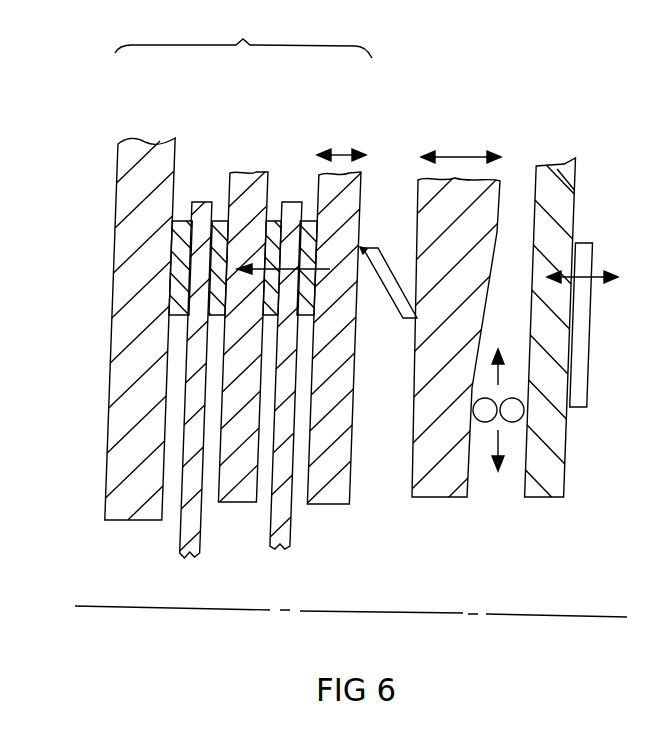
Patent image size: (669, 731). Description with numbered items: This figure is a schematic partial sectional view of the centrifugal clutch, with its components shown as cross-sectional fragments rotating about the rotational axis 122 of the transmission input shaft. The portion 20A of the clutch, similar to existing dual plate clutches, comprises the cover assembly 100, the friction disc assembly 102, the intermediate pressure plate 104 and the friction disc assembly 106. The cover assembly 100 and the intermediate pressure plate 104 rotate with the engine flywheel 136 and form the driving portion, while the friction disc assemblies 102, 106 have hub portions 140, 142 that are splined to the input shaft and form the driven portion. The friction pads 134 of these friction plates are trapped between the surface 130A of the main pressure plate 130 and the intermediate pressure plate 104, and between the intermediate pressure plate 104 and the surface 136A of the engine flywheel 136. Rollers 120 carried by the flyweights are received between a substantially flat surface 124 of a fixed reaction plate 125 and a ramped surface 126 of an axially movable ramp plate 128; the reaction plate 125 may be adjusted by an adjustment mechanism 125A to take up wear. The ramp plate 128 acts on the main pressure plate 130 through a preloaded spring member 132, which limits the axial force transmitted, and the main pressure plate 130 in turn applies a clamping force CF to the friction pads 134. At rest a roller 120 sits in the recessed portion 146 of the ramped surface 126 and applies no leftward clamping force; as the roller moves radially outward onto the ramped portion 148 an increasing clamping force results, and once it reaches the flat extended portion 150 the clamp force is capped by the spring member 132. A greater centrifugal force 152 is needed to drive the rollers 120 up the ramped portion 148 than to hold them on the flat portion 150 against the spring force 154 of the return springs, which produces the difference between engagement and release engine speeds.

The portion of clutch 20A is at (243, 39).
The cover assembly 100 is at (407, 114).
The friction disc assembly 102 is at (319, 132).
The friction disc assembly 106 is at (246, 138).
The ramp plate 128 is at (457, 141).
The engine flywheel 136 is at (120, 249).
The surface of engine flywheel 136A is at (177, 155).
The friction pads 134 is at (182, 226).
The hub portion 142 is at (182, 537).
The intermediate pressure plate 104 is at (235, 503).
The hub portion 140 is at (296, 538).
The main pressure plate 130 is at (327, 505).
The surface of main pressure plate 130A is at (312, 375).
The clamping force CF is at (320, 247).
The preloaded spring member 132 is at (388, 290).
The ramped surface 126 is at (466, 493).
The recessed portion 146 is at (416, 397).
The flat surface 124 is at (533, 177).
The reaction plate 125 is at (565, 202).
The adjustment mechanism 125A is at (583, 335).
The flat extended portion 150 is at (498, 231).
The ramped portion 148 is at (486, 320).
The centrifugal force 152 is at (500, 383).
The rollers 120 is at (524, 427).
The spring force 154 is at (527, 441).
The rotational axis 122 is at (232, 611).